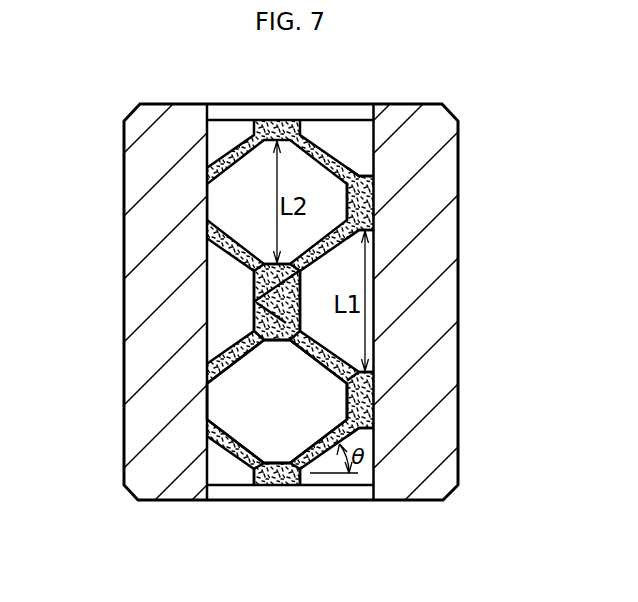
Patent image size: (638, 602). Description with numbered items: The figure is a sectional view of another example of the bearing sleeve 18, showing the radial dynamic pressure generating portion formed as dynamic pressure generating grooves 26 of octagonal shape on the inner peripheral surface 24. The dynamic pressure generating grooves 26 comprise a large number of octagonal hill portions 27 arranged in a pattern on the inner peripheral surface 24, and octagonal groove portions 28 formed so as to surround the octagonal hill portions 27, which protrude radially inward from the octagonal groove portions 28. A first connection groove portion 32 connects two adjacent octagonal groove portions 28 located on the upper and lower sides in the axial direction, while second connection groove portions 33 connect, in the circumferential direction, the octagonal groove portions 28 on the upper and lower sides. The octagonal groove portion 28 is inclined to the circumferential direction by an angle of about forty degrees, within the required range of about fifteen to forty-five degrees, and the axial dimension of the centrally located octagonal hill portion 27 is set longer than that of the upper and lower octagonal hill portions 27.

The bearing sleeve 18 is at (471, 198).
The inner peripheral surface 24 is at (207, 309).
The dynamic pressure generating grooves 26 is at (223, 547).
The octagonal hill portion 27 is at (297, 425).
The octagonal groove portion 28 is at (253, 463).
The first connection groove portion 32 is at (253, 285).
The second connection groove portion 33 is at (373, 176).